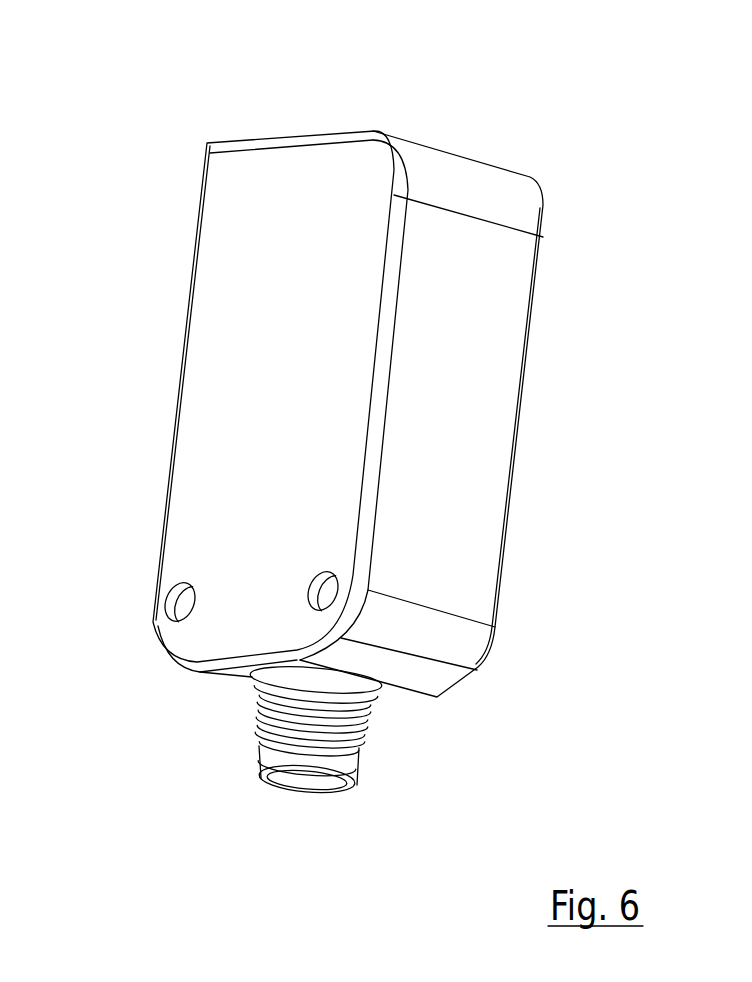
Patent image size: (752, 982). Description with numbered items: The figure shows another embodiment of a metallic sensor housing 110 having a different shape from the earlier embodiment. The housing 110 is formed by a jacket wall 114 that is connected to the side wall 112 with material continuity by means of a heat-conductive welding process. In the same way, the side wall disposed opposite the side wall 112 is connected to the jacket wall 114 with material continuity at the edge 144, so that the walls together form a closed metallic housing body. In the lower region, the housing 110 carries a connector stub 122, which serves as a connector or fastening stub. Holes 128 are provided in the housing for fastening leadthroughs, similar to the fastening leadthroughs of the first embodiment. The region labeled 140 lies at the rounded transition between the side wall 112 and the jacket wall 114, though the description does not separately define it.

The metallic sensor housing 110 is at (342, 417).
The side wall 112 is at (213, 382).
The jacket wall 114 is at (503, 375).
The connector stub 122 is at (260, 758).
The holes 128 is at (338, 584).
The rounded edge 140 is at (387, 235).
The edge 144 is at (523, 432).